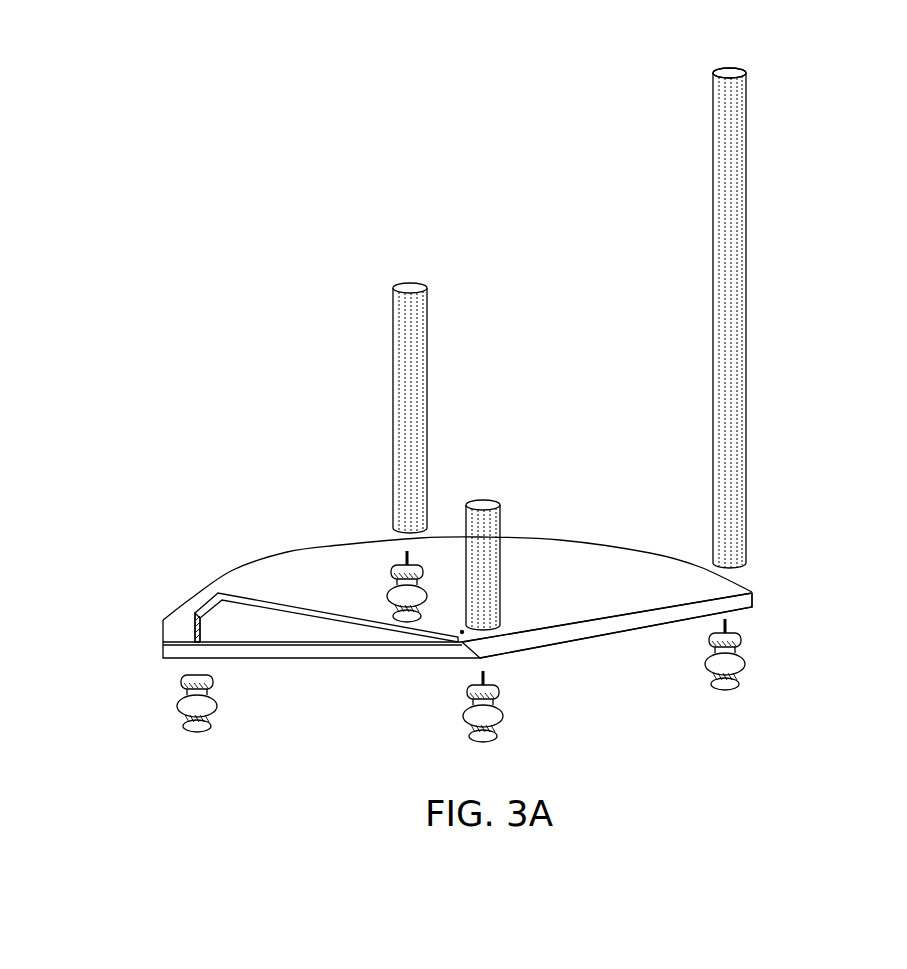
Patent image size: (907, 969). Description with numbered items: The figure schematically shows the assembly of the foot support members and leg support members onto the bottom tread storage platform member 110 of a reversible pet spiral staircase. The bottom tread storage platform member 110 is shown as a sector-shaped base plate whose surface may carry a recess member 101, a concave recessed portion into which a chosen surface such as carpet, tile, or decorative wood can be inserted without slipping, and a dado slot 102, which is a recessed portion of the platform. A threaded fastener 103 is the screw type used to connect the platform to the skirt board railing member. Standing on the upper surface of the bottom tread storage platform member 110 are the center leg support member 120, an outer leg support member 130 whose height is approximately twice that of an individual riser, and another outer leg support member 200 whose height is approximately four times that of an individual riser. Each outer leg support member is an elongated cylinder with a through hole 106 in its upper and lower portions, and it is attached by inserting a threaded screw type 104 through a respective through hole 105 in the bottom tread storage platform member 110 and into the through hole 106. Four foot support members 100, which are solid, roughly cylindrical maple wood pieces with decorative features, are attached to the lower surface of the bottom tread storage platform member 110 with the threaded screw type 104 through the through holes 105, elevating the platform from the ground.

The foot support member 100 is at (503, 717).
The recess member 101 is at (240, 633).
The dado slot 102 is at (342, 617).
The threaded fastener 103 is at (200, 612).
The threaded screw type 104 is at (733, 630).
The through hole 105 is at (760, 592).
The through hole 106 is at (745, 78).
The bottom tread storage platform member 110 is at (292, 573).
The center leg support member 120 is at (490, 583).
The outer leg support member 130 is at (730, 398).
The outer leg support member 200 is at (420, 418).